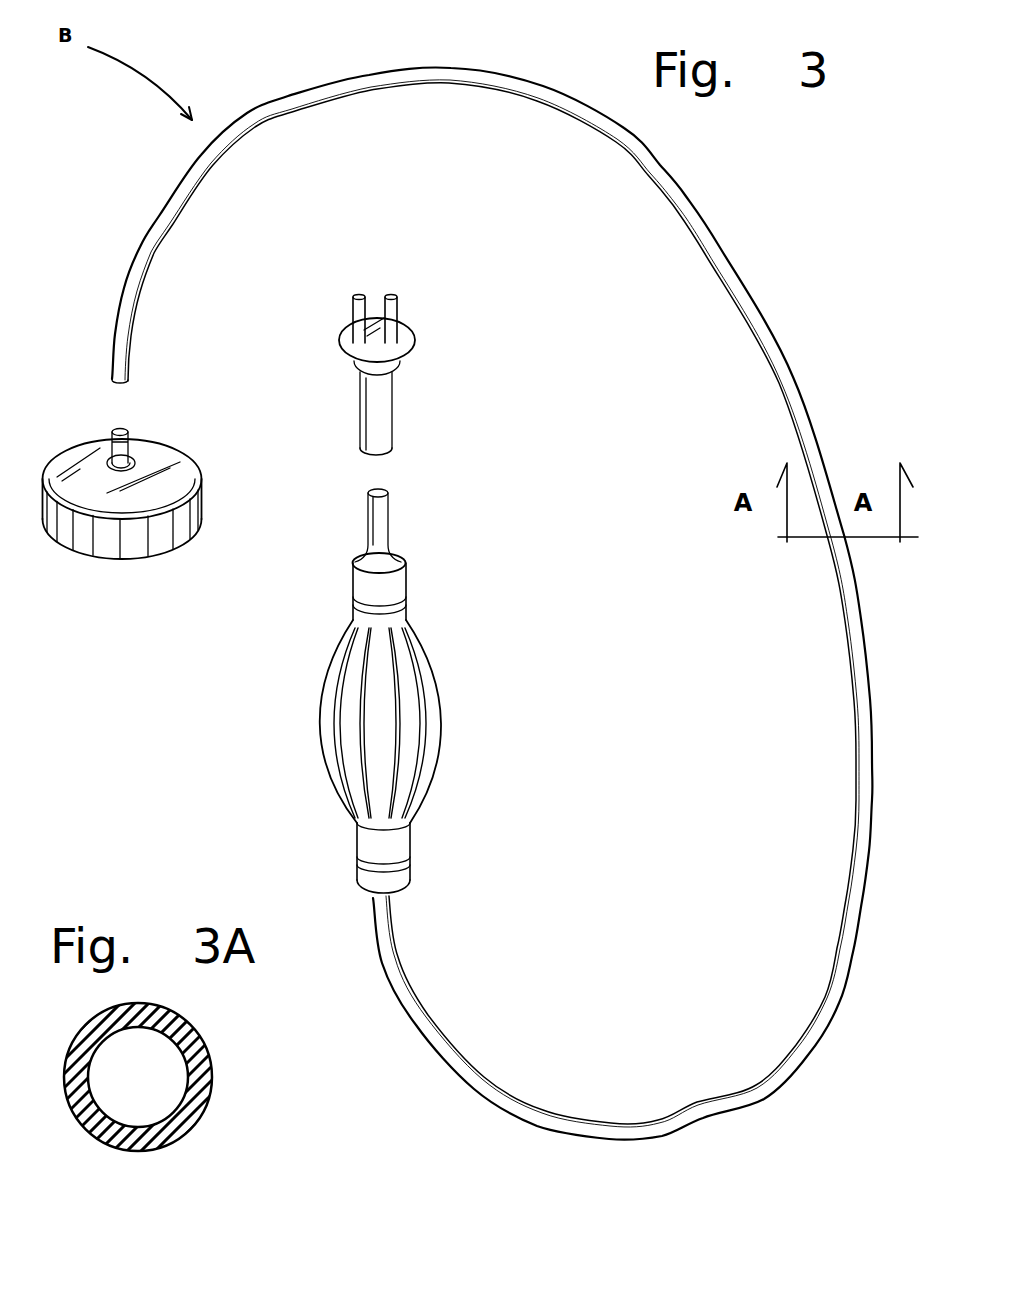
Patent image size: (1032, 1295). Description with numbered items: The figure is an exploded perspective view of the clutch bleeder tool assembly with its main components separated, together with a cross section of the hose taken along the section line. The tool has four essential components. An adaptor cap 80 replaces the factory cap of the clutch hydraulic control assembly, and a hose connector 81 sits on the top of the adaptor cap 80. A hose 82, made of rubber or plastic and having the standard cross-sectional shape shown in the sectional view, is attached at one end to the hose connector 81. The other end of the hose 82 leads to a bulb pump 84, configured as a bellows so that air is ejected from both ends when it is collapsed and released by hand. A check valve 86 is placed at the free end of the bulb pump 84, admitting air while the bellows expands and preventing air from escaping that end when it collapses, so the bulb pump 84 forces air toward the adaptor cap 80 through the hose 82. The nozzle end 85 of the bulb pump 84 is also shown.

In FIG. 3, the adaptor cap 80 is at (177, 535).
In FIG. 3, the hose connector 81 is at (132, 438).
In FIG. 3, the hose 82 is at (709, 241).
In FIG. 3A, the hose 82 is at (207, 1098).
In FIG. 3, the bulb pump 84 is at (412, 708).
In FIG. 3, the nozzle 85 is at (383, 535).
In FIG. 3, the check valve 86 is at (403, 347).